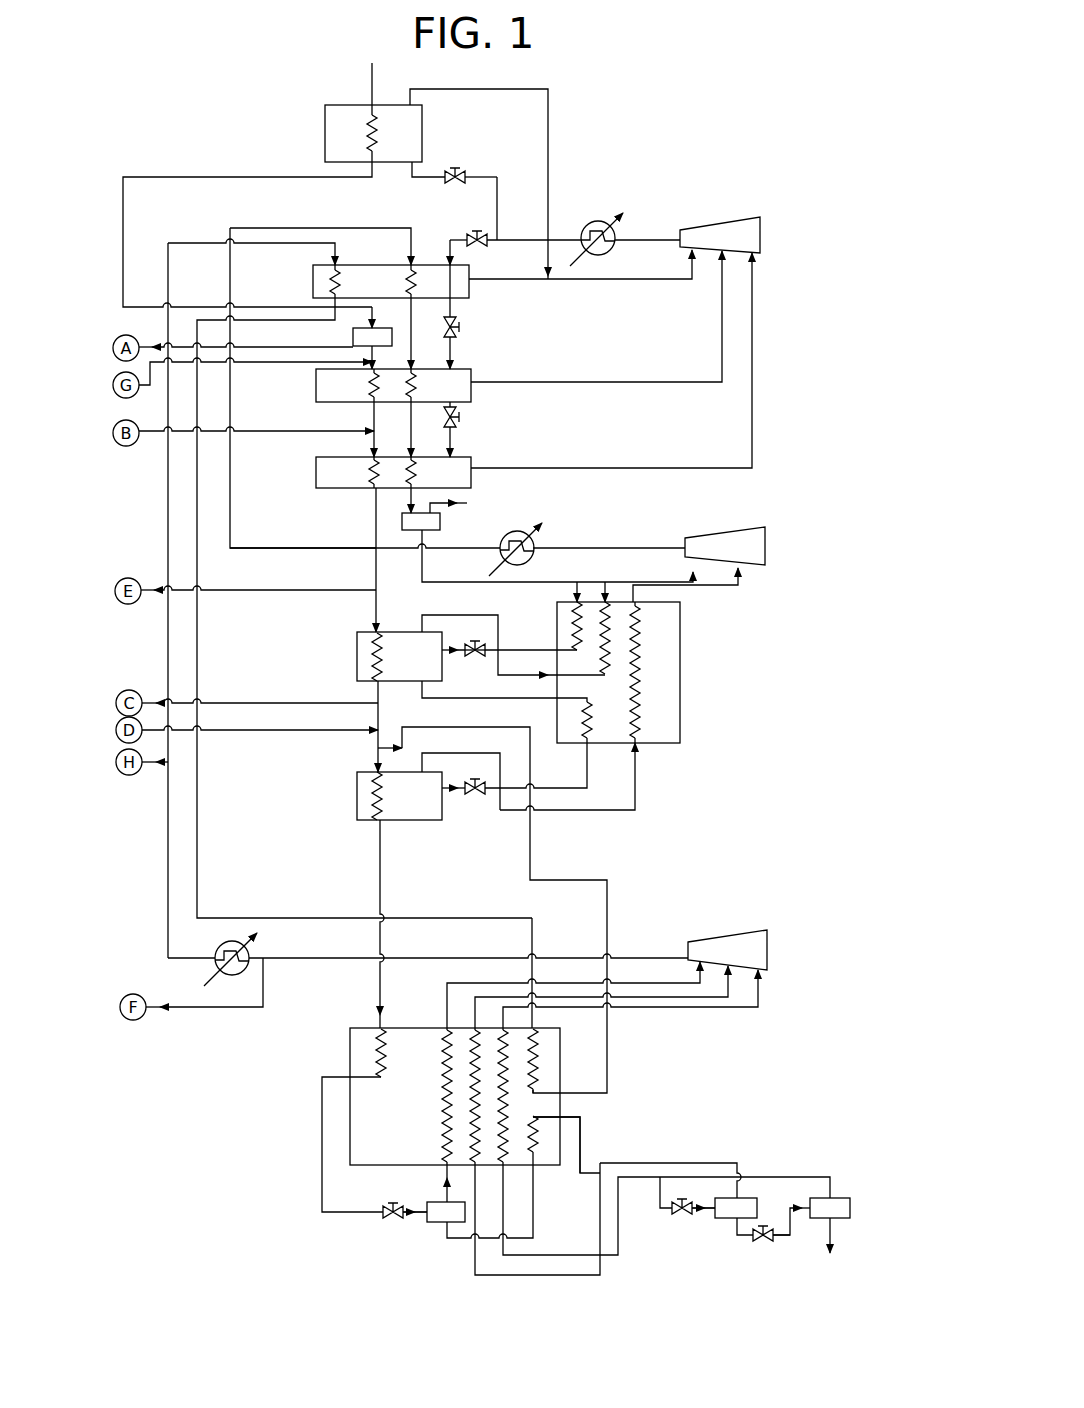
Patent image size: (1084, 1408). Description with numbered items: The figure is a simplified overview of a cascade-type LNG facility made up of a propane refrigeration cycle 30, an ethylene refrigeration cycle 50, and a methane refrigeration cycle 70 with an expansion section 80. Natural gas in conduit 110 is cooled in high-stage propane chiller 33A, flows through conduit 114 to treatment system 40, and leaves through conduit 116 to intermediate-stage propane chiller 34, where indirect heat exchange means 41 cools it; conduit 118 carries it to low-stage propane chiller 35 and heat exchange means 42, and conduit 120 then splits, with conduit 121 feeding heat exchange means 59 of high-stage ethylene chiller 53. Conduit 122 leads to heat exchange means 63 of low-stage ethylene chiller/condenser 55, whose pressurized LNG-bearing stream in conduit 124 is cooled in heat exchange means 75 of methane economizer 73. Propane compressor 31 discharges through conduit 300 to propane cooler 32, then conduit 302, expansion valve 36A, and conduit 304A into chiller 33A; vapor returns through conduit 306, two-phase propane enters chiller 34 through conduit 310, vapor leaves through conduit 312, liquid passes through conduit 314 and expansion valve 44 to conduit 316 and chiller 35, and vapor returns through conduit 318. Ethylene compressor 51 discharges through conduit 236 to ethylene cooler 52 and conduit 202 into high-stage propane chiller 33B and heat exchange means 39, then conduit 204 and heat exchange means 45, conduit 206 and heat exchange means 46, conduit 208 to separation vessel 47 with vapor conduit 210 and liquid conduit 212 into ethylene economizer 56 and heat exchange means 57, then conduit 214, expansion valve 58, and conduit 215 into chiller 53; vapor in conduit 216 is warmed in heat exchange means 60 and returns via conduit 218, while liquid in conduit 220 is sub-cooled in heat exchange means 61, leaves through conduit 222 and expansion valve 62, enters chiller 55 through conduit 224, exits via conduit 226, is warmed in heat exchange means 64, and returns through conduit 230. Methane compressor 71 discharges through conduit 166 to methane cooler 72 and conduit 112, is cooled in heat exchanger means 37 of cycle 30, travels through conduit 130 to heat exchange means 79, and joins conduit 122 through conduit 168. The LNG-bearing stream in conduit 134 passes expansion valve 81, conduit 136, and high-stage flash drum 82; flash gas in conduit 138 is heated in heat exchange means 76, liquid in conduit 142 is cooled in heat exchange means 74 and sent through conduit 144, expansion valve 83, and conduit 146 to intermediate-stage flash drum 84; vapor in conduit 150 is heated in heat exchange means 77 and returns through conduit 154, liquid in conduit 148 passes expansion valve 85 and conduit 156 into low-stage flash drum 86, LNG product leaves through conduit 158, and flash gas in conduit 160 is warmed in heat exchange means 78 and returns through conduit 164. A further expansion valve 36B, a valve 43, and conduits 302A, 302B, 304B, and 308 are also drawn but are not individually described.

The propane refrigeration cycle 30 is at (857, 243).
The propane compressor 31 is at (728, 218).
The propane cooler/condenser 32 is at (590, 224).
The high-stage propane chiller 33A is at (424, 112).
The high-stage propane chiller 33B is at (313, 280).
The intermediate-stage propane chiller 34 is at (316, 388).
The low-stage propane chiller 35 is at (316, 474).
The expansion valve 36A is at (455, 168).
The valve 36B is at (477, 250).
The heat exchanger means 37 is at (340, 280).
The indirect heat exchange means 39 is at (416, 280).
The treatment system 40 is at (400, 327).
The indirect heat exchange means 41 is at (369, 384).
The indirect heat exchange means 42 is at (369, 472).
The valve 43 is at (462, 328).
The expansion valve 44 is at (456, 420).
The indirect heat exchange means 45 is at (416, 383).
The indirect heat exchange means 46 is at (416, 470).
The separation vessel 47 is at (440, 521).
The ethylene refrigeration cycle 50 is at (848, 562).
The ethylene compressor 51 is at (722, 534).
The ethylene cooler 52 is at (510, 533).
The high-stage ethylene chiller 53 is at (357, 648).
The low-stage ethylene chiller/condenser 55 is at (357, 788).
The ethylene economizer 56 is at (680, 640).
The indirect heat exchange means 57 is at (570, 632).
The expansion valve 58 is at (474, 660).
The indirect heat exchange means 59 is at (386, 655).
The indirect heat exchange means 60 is at (603, 660).
The indirect heat exchange means 61 is at (592, 728).
The expansion valve 62 is at (478, 797).
The indirect heat exchange means 63 is at (386, 794).
The indirect heat exchange means 64 is at (642, 664).
The methane refrigeration cycle 70 is at (832, 990).
The methane compressor 71 is at (735, 930).
The methane cooler 72 is at (220, 943).
The methane economizer 73 is at (350, 1050).
The indirect heat exchange means 74 is at (540, 1128).
The indirect heat exchange means 75 is at (390, 1062).
The indirect heat exchange means 76 is at (442, 1105).
The indirect heat exchange means 77 is at (470, 1140).
The indirect heat exchange means 78 is at (508, 1095).
The indirect heat exchange means 79 is at (540, 1060).
The expansion section 80 is at (675, 1150).
The high-stage methane expansion valve and/or expander 81 is at (385, 1222).
The high-stage methane flash drum 82 is at (440, 1225).
The intermediate-stage methane expansion valve and/or expander 83 is at (672, 1215).
The intermediate-stage methane flash drum 84 is at (757, 1202).
The low-stage methane expansion valve and/or expander 85 is at (766, 1248).
The low-stage methane flash drum 86 is at (850, 1198).
The conduit 110 is at (372, 90).
The conduit 112 is at (197, 243).
The conduit 114 is at (170, 177).
The conduit 116 is at (353, 337).
The conduit 118 is at (370, 436).
The conduit 120 is at (376, 548).
The conduit 121 is at (374, 612).
The conduit 122 is at (376, 696).
The conduit 124 is at (378, 868).
The conduit 130 is at (205, 318).
The conduit 134 is at (320, 1200).
The conduit 136 is at (398, 1197).
The conduit 138 is at (445, 1000).
The conduit 142 is at (536, 1218).
The conduit 144 is at (590, 1178).
The conduit 146 is at (690, 1222).
The conduit 148 is at (737, 1242).
The conduit 150 is at (615, 1162).
The conduit 154 is at (620, 1000).
The conduit 156 is at (785, 1238).
The conduit 158 is at (835, 1230).
The conduit 160 is at (760, 1176).
The conduit 164 is at (690, 1010).
The conduit 166 is at (537, 950).
The conduit 168 is at (570, 878).
The conduit 202 is at (352, 552).
The conduit 204 is at (452, 354).
The conduit 206 is at (406, 422).
The conduit 208 is at (406, 497).
The conduit 210 is at (456, 503).
The conduit 212 is at (440, 581).
The conduit 214 is at (546, 668).
The conduit 215 is at (468, 644).
The conduit 216 is at (498, 614).
The conduit 218 is at (605, 581).
The conduit 220 is at (503, 700).
The conduit 222 is at (587, 780).
The conduit 224 is at (466, 786).
The conduit 226 is at (637, 792).
The conduit 230 is at (700, 588).
The conduit 236 is at (562, 546).
The conduit 300 is at (622, 242).
The conduit 302 is at (548, 236).
The flow line 302A is at (497, 178).
The flow line 302B is at (487, 243).
The conduit 304A is at (438, 178).
The flow line 304B is at (468, 236).
The conduit 306 is at (562, 282).
The flow line 308 is at (454, 304).
The conduit 310 is at (454, 343).
The conduit 312 is at (570, 380).
The conduit 314 is at (455, 410).
The conduit 316 is at (454, 440).
The conduit 318 is at (570, 466).